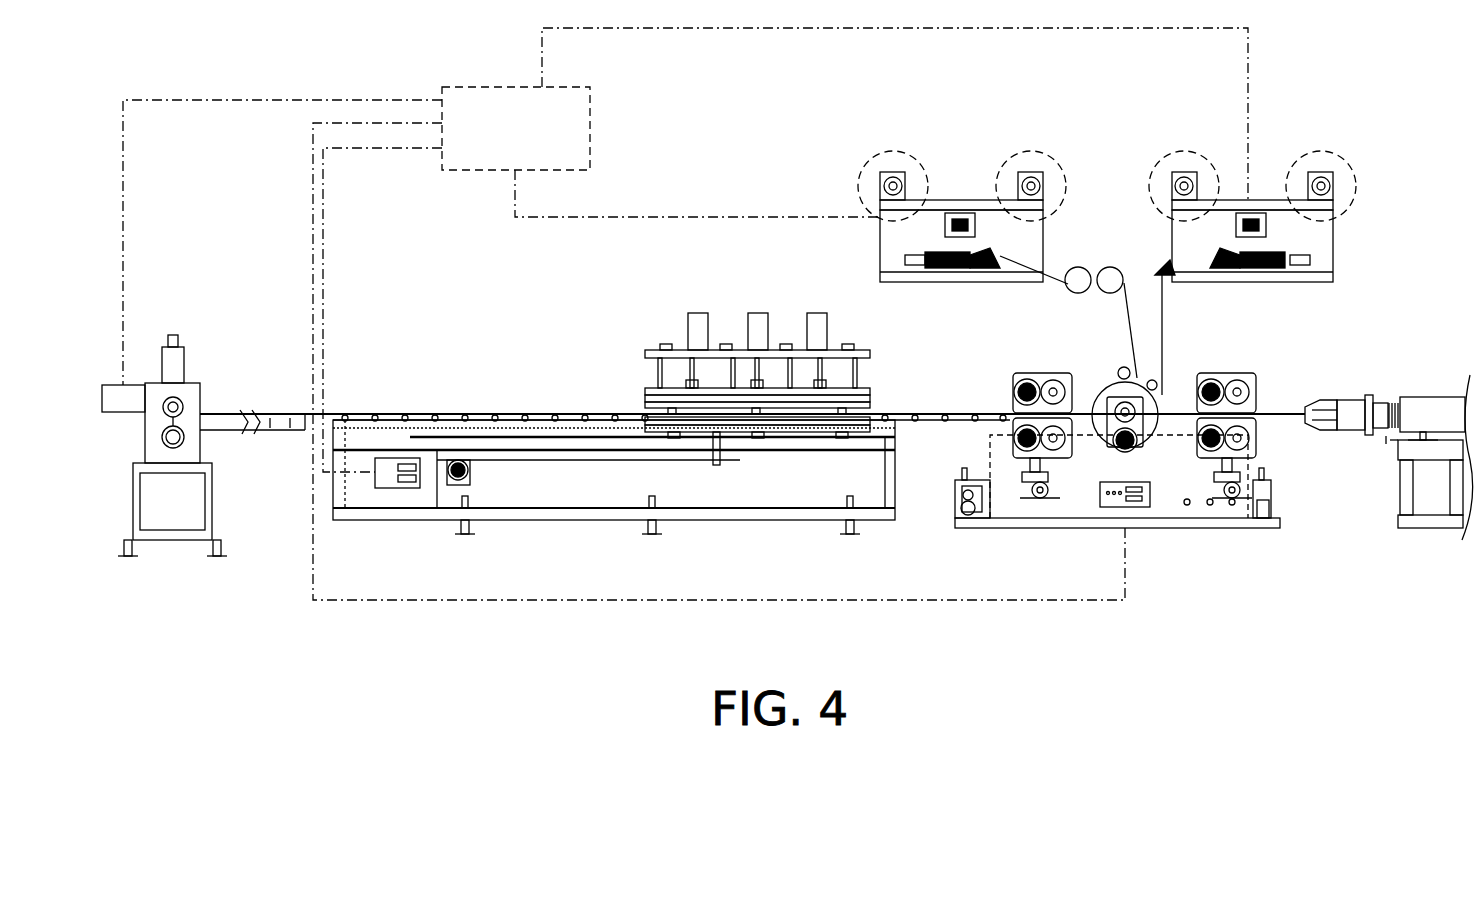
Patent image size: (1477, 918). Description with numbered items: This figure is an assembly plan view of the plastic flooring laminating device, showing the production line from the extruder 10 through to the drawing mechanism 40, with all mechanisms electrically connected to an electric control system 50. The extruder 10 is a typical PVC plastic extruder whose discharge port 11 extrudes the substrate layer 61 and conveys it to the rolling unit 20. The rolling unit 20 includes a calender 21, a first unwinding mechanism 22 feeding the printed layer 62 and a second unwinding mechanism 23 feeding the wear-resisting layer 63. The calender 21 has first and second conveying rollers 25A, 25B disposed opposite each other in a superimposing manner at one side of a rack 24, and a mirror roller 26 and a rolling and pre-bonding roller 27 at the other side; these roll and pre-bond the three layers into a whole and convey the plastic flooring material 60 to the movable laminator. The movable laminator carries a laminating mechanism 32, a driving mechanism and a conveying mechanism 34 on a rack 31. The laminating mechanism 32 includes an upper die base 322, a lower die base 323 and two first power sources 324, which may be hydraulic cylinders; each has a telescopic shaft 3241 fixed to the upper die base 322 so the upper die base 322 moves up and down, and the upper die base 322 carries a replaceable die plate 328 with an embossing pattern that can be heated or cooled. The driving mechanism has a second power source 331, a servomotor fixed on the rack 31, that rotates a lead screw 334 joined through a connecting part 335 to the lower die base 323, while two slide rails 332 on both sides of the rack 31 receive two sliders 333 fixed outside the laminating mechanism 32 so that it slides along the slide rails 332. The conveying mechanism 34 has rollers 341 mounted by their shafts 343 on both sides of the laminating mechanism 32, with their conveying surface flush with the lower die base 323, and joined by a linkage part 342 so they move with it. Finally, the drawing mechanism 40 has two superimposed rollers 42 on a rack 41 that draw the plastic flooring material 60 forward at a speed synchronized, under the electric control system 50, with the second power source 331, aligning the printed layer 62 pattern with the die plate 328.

The extruder 10 is at (1387, 442).
The discharge port 11 is at (1305, 398).
The rolling unit 20 is at (1107, 205).
The calender 21 is at (1136, 454).
The first unwinding mechanism 22 is at (1258, 210).
The second unwinding mechanism 23 is at (950, 210).
The rack 24 is at (1020, 514).
The first conveying roller 25A is at (1240, 372).
The second conveying roller 25B is at (1258, 440).
The mirror roller 26 is at (1145, 432).
The rolling and pre-bonding roller 27 is at (1060, 372).
The rack 31 is at (714, 466).
The laminating mechanism 32 is at (693, 374).
The conveying mechanism 34 is at (671, 348).
The drawing mechanism 40 is at (203, 445).
The rack 41 is at (212, 503).
The rollers 42 is at (190, 428).
The electric control system 50 is at (508, 87).
The plastic flooring material 60 is at (1130, 416).
The substrate layer 61 is at (1270, 410).
The printed layer 62 is at (1163, 332).
The wear-resisting layer 63 is at (1130, 316).
The upper die base 322 is at (645, 396).
The lower die base 323 is at (645, 420).
The first power sources 324 is at (818, 318).
The die plate 328 is at (870, 398).
The second power source 331 is at (455, 485).
The slide rails 332 is at (793, 438).
The sliders 333 is at (842, 438).
The lead screw 334 is at (562, 480).
The connecting part 335 is at (696, 522).
The rollers 341 is at (403, 414).
The linkage part 342 is at (500, 414).
The shafts 343 is at (437, 414).
The telescopic shaft 3241 is at (686, 360).